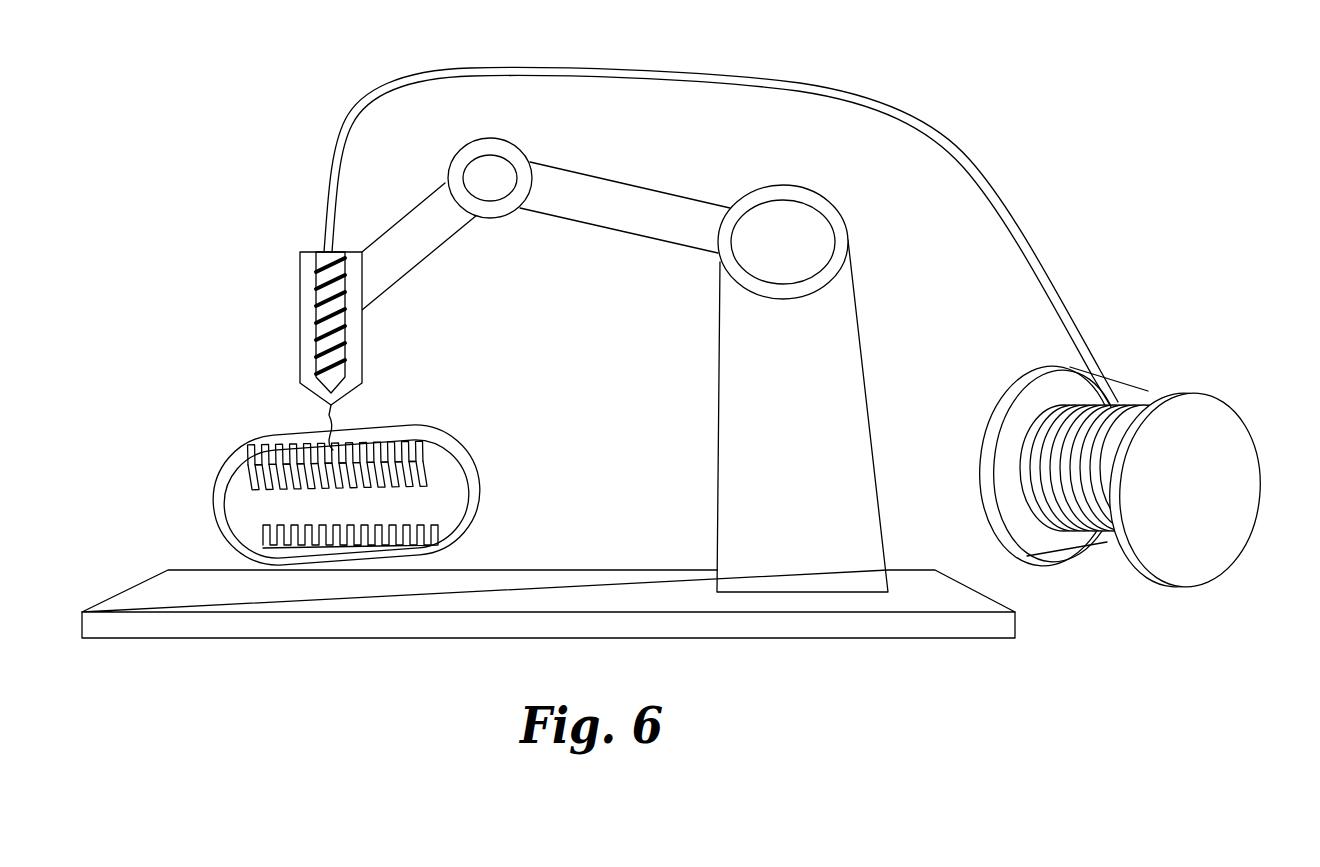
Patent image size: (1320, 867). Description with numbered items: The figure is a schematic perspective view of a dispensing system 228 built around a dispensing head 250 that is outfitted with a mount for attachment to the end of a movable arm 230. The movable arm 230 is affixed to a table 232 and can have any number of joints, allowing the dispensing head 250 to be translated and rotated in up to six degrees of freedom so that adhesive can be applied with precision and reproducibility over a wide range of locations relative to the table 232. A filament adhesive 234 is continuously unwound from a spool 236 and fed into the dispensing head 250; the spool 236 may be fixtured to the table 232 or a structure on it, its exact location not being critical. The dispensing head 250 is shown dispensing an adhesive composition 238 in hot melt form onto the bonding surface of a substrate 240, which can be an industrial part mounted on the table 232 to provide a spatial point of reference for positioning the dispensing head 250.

The dispensing system 228 is at (1118, 121).
The movable arm 230 is at (642, 200).
The table 232 is at (387, 625).
The filament adhesive 234 is at (358, 115).
The spool 236 is at (1247, 427).
The adhesive composition 238 is at (330, 426).
The substrate 240 is at (467, 465).
The dispensing head 250 is at (300, 296).